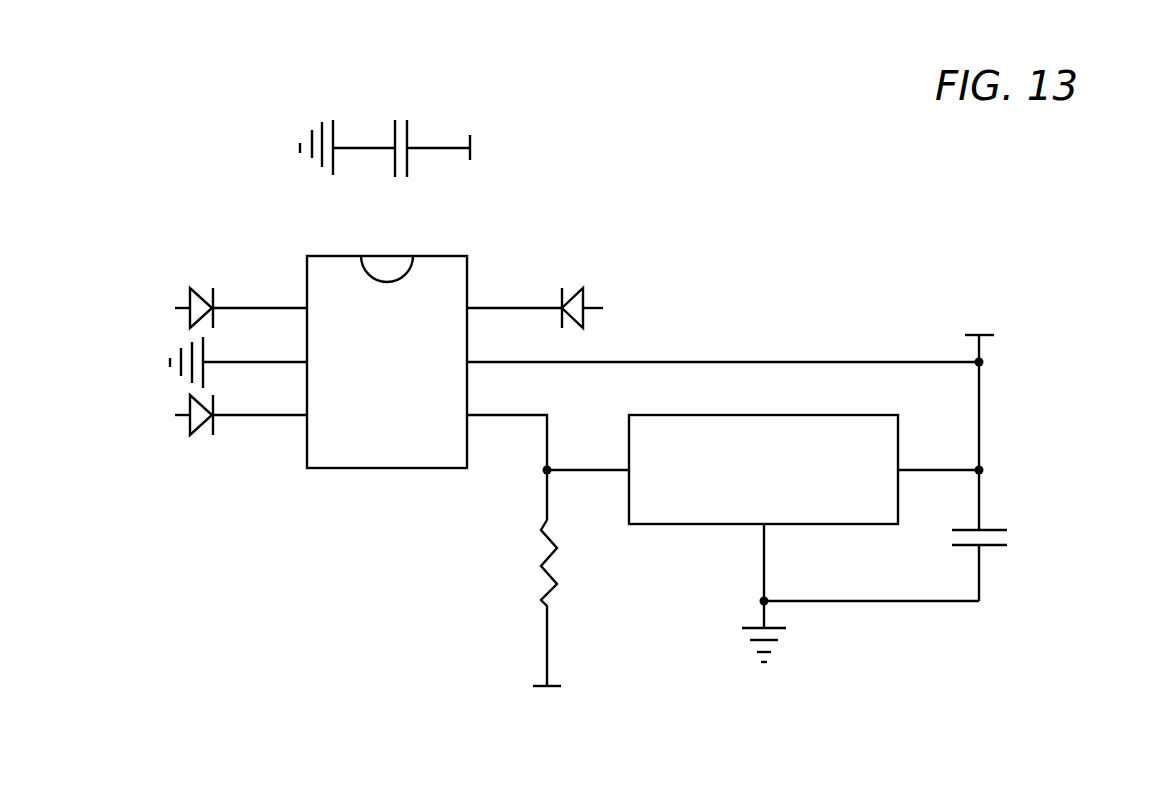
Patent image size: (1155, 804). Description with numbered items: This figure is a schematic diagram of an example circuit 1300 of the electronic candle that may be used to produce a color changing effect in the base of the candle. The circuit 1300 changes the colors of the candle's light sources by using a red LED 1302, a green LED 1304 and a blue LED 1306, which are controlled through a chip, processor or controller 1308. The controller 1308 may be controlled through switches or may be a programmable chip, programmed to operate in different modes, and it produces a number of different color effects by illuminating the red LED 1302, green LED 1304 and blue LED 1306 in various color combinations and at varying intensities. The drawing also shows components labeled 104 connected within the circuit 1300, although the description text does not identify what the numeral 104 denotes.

The circuit 1300 is at (671, 121).
The red LED 1302 is at (190, 298).
The green LED 1304 is at (190, 423).
The blue LED 1306 is at (585, 298).
The controller 1308 is at (422, 383).
The capacitor 104 is at (661, 330).